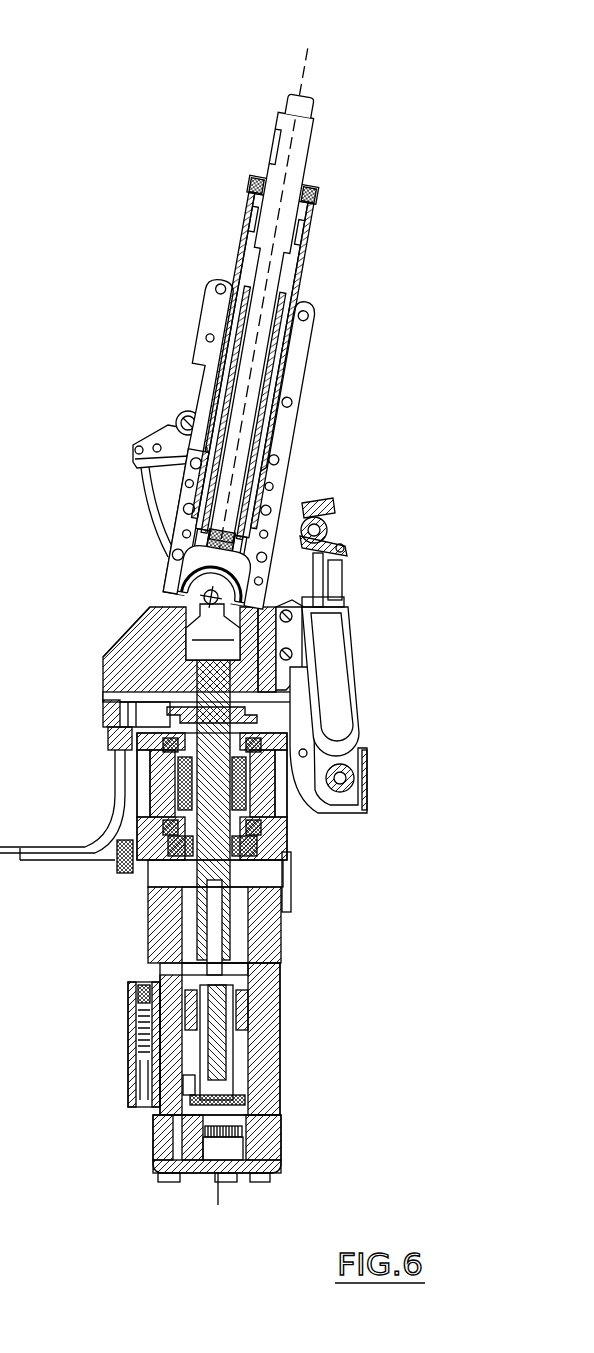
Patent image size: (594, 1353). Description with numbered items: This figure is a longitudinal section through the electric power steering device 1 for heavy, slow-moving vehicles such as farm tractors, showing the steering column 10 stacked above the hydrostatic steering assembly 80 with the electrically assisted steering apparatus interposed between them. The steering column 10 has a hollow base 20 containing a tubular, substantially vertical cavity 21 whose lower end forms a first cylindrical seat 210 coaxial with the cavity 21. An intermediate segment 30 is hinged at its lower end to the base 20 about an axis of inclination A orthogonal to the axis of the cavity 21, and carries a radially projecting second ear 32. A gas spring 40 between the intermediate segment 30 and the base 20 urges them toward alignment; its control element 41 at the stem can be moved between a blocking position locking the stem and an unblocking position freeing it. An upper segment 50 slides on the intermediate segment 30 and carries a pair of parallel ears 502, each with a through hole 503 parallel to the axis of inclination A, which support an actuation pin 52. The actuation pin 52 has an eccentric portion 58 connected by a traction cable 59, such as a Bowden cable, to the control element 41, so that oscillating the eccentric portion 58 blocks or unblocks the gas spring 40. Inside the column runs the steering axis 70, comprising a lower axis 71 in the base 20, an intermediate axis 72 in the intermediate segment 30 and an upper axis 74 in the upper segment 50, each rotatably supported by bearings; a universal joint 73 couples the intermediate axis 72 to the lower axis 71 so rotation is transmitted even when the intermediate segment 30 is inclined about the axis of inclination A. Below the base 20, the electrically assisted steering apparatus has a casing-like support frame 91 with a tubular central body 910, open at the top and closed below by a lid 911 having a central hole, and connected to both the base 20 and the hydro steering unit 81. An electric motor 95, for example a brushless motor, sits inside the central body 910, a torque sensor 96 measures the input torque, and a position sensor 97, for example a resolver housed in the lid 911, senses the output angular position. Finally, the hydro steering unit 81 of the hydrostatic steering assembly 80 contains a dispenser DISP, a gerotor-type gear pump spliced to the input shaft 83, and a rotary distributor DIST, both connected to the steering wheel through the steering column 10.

The electric power steering device 1 is at (365, 110).
The steering column 10 is at (205, 195).
The base 20 is at (155, 630).
The cavity 21 is at (190, 655).
The first cylindrical seat 210 is at (200, 683).
The intermediate segment 30 is at (283, 473).
The second ear 32 is at (300, 503).
The gas spring 40 is at (340, 698).
The control element 41 is at (352, 548).
The upper segment 50 is at (310, 240).
The ears 502 is at (212, 385).
The through hole 503 is at (190, 410).
The actuation pin 52 is at (132, 353).
The eccentric portion 58 is at (150, 442).
The traction cable 59 is at (145, 480).
The steering axis 70 is at (312, 95).
The lower axis 71 is at (232, 636).
The intermediate axis 72 is at (266, 468).
The joint 73 is at (200, 592).
The upper axis 74 is at (282, 158).
The hydrostatic steering assembly 80 is at (305, 1155).
The hydro steering unit 81 is at (277, 1030).
The input shaft 83 is at (165, 977).
The support frame 91 is at (149, 796).
The central body 910 is at (150, 788).
The lid 911 is at (281, 923).
The electric motor 95 is at (285, 823).
The torque sensor 96 is at (170, 724).
The position sensor 97 is at (152, 900).
The axis of inclination A is at (296, 612).
The dispenser DISP is at (256, 1135).
The rotary distributor DIST is at (190, 1085).